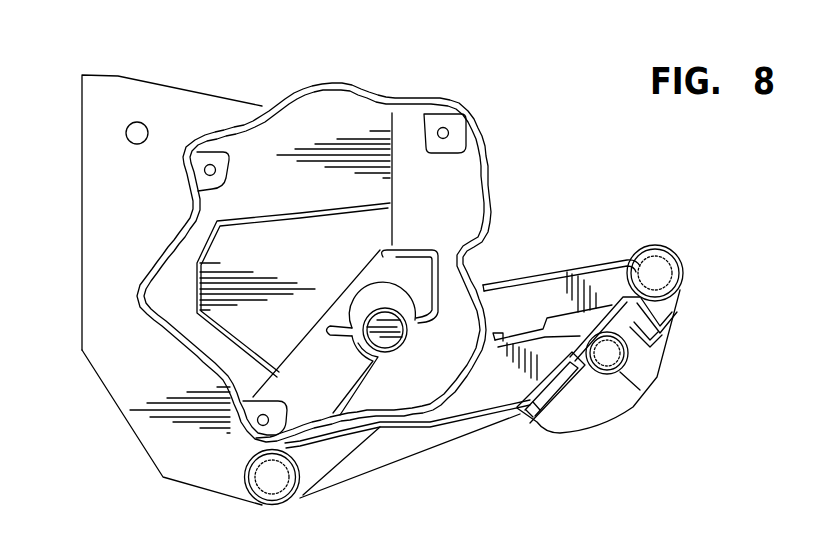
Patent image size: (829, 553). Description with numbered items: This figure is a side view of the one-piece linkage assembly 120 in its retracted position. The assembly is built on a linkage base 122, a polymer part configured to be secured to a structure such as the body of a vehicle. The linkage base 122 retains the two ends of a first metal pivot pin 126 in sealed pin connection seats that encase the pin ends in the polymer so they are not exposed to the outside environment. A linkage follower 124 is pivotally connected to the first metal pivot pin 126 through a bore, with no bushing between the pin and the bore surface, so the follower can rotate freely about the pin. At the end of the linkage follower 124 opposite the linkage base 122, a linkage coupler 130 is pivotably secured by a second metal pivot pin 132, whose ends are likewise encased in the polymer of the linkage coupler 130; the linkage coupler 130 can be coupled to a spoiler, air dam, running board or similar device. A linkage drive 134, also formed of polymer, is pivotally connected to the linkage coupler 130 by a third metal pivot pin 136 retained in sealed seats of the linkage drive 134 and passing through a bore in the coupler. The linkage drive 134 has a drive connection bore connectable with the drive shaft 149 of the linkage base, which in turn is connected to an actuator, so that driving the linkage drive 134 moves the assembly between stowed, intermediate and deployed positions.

The one-piece linkage assembly 120 is at (445, 82).
The linkage base 122 is at (118, 413).
The linkage follower 124 is at (467, 412).
The first metal pivot pin 126 is at (273, 503).
The linkage coupler 130 is at (660, 318).
The second metal pivot pin 132 is at (637, 400).
The linkage drive 134 is at (543, 282).
The third metal pivot pin 136 is at (670, 256).
The drive shaft 149 is at (388, 343).